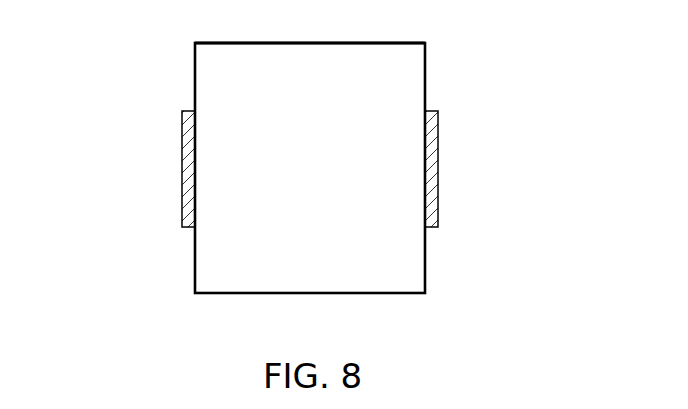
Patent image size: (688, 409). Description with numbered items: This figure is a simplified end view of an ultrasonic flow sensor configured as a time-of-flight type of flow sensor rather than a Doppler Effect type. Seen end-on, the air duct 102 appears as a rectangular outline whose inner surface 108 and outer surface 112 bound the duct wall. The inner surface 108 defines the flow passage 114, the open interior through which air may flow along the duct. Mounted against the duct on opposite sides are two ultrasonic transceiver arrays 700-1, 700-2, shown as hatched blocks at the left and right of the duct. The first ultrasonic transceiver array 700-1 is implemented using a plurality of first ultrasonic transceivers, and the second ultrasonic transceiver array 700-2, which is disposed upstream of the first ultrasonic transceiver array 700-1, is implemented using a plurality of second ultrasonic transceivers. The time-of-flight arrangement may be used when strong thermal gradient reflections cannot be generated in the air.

The air duct 102 is at (188, 71).
The inner surface 108 is at (278, 44).
The outer surface 112 is at (383, 43).
The flow passage 114 is at (295, 180).
The first ultrasonic transceiver array 700-1 is at (163, 155).
The second ultrasonic transceiver array 700-2 is at (457, 155).